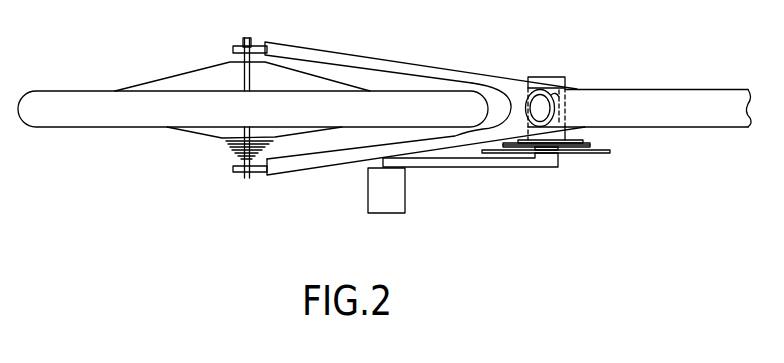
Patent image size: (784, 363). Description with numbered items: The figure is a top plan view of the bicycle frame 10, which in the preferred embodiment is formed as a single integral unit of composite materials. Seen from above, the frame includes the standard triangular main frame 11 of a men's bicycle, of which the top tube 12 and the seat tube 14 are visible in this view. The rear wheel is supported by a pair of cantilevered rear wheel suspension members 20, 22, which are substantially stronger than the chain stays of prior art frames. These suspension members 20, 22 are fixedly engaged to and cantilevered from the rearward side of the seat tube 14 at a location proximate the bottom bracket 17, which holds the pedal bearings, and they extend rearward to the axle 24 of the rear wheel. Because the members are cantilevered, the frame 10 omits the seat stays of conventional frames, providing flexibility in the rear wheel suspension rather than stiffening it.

The bicycle frame 10 is at (708, 128).
The triangular main frame 11 is at (648, 90).
The top tube 12 is at (711, 95).
The seat tube 14 is at (560, 90).
The bottom bracket 17 is at (533, 77).
The rear wheel suspension member 20 is at (407, 48).
The rear wheel suspension member 22 is at (327, 162).
The axle 24 is at (247, 38).